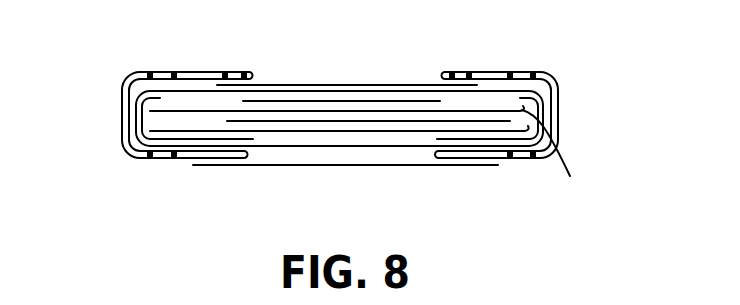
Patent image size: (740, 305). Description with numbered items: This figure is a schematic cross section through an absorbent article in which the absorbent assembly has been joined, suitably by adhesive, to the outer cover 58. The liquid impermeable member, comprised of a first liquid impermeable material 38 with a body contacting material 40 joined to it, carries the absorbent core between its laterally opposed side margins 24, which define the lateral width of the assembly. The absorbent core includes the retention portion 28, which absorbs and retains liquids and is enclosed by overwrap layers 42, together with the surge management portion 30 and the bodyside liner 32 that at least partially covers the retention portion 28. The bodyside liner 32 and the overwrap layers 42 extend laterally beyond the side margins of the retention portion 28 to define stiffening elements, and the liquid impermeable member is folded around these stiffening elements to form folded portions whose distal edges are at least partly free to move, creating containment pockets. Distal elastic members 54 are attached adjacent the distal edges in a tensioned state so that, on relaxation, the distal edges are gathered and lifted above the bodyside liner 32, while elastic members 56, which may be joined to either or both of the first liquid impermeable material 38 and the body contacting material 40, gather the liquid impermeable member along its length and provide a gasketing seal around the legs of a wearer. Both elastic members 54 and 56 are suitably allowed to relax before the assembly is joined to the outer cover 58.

The laterally opposed side margins 24 is at (121, 115).
The retention portion 28 is at (337, 121).
The surge management portion 30 is at (368, 100).
The bodyside liner 32 is at (329, 91).
The first liquid impermeable material 38 is at (412, 151).
The body contacting material 40 is at (231, 165).
The overwrap layers 42 is at (563, 154).
The distal elastic members 54 is at (225, 72).
The elastic members 56 is at (174, 72).
The outer cover 58 is at (277, 167).